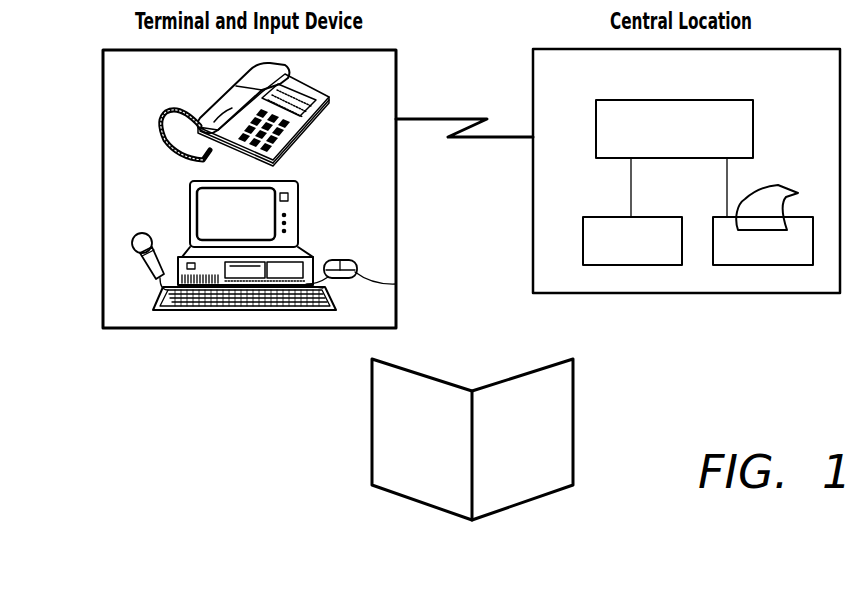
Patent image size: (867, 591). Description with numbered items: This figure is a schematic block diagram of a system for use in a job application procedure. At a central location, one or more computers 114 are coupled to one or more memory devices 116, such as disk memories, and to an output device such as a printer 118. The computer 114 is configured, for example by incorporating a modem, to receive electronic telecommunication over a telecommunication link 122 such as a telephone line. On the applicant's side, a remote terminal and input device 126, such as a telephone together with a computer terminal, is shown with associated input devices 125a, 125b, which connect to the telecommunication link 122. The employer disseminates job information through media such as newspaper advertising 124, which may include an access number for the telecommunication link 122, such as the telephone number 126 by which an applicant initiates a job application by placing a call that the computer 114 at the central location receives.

The computer 114 is at (753, 118).
The memory device 116 is at (623, 265).
The printer 118 is at (779, 265).
The telecommunication link 122 is at (433, 119).
The newspaper advertising 124 is at (375, 465).
The microphone input device 125a is at (132, 243).
The mouse input device 125b is at (396, 284).
The telephone number 126 is at (125, 318).